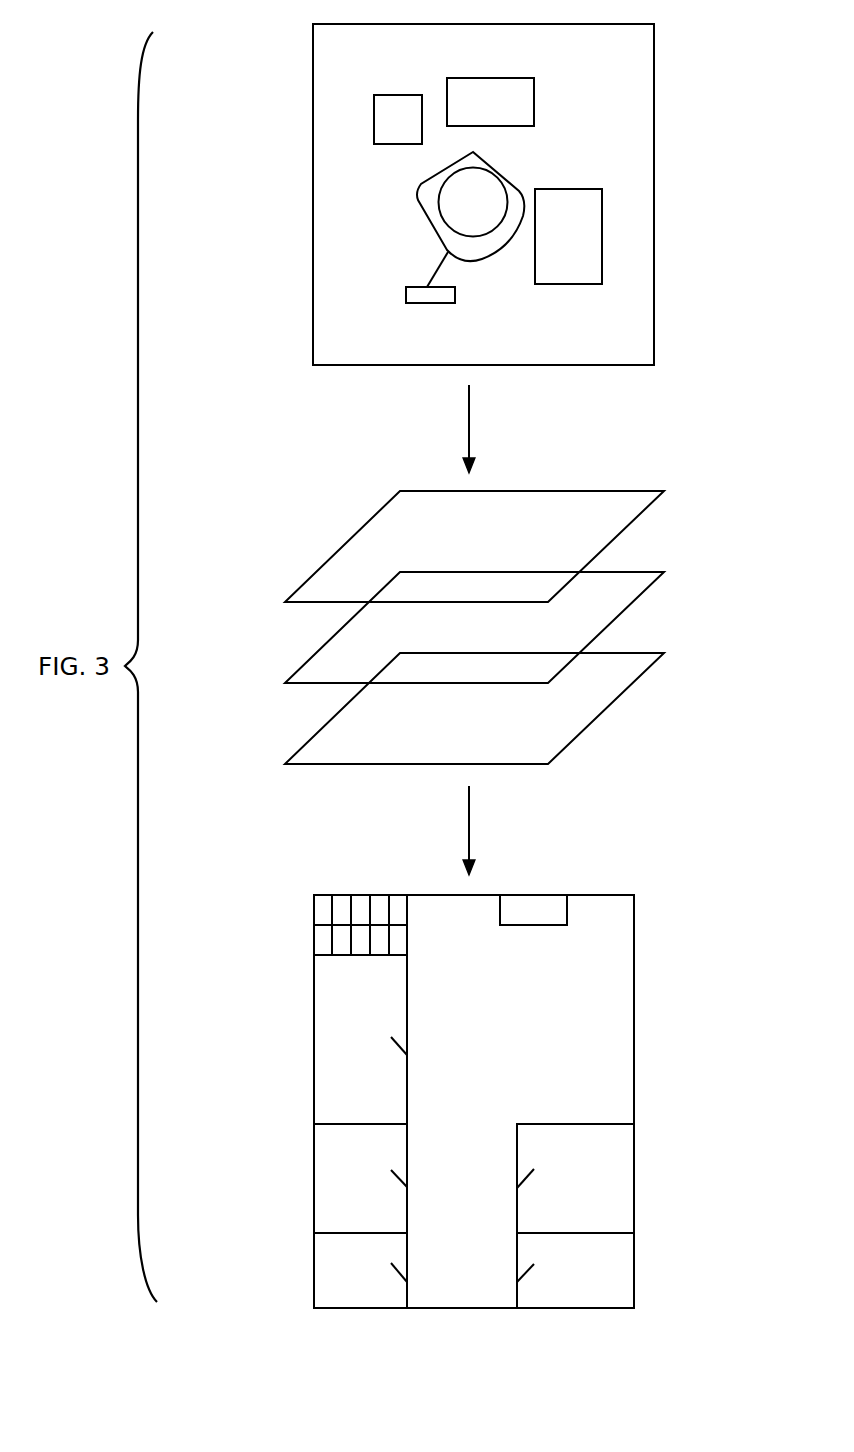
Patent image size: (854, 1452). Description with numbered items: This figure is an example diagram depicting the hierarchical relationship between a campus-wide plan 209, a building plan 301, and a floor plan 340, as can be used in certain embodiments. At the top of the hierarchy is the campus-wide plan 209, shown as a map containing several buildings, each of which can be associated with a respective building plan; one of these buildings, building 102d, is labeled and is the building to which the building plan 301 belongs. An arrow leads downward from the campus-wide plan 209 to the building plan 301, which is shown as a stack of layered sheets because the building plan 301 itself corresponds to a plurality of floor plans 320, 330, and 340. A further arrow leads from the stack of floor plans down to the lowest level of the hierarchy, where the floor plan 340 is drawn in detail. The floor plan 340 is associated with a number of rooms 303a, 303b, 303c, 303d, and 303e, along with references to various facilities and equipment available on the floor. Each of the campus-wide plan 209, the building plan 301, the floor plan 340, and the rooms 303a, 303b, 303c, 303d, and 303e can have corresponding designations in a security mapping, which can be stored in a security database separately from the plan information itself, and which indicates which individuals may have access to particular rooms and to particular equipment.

The campus-wide plan 209 is at (656, 110).
The building 102d is at (573, 285).
The building plan 301 is at (577, 445).
The floor plan 320 is at (308, 603).
The floor plan 330 is at (308, 684).
The floor plan 340 is at (308, 765).
The room 303a is at (330, 1031).
The room 303b is at (330, 1185).
The room 303c is at (330, 1274).
The room 303d is at (623, 1175).
The room 303e is at (623, 1275).